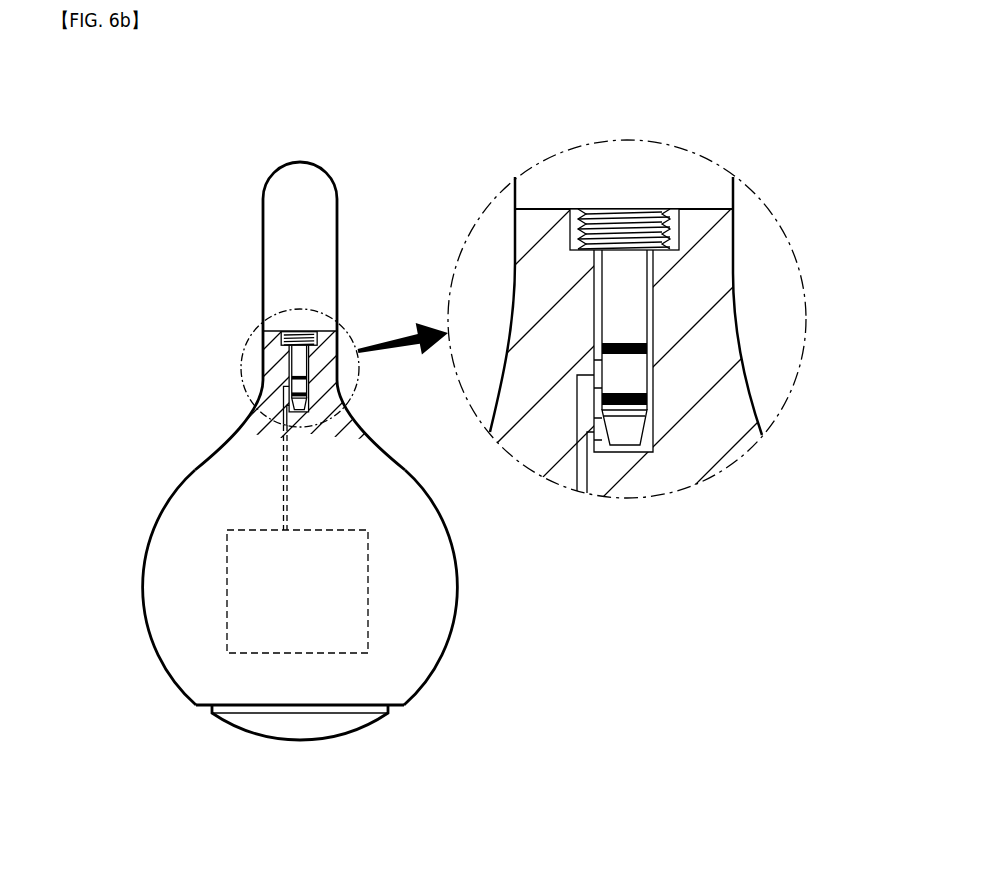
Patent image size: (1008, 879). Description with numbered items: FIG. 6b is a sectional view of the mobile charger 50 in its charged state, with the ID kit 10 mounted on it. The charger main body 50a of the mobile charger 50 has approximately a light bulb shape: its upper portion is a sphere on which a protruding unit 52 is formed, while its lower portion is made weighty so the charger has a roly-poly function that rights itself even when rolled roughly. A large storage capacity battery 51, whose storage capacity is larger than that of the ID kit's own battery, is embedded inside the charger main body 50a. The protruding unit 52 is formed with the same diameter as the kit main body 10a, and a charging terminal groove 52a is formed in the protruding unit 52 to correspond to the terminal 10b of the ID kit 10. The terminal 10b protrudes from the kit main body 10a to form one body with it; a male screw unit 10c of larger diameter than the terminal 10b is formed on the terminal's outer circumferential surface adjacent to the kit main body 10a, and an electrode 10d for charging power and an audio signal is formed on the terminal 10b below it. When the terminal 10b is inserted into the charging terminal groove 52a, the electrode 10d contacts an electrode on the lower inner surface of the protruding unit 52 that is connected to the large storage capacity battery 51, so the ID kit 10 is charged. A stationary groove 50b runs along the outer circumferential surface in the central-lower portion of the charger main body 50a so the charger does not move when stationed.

The ID kit 10 is at (258, 183).
The kit main body 10a is at (272, 258).
The terminal 10b is at (613, 295).
The male screw unit 10c is at (613, 222).
The electrode 10d is at (633, 375).
The mobile charger 50 is at (165, 477).
The charger main body 50a is at (173, 545).
The stationary groove 50b is at (207, 713).
The large storage capacity battery 51 is at (227, 583).
The protruding unit 52 is at (705, 322).
The charging terminal groove 52a is at (650, 312).